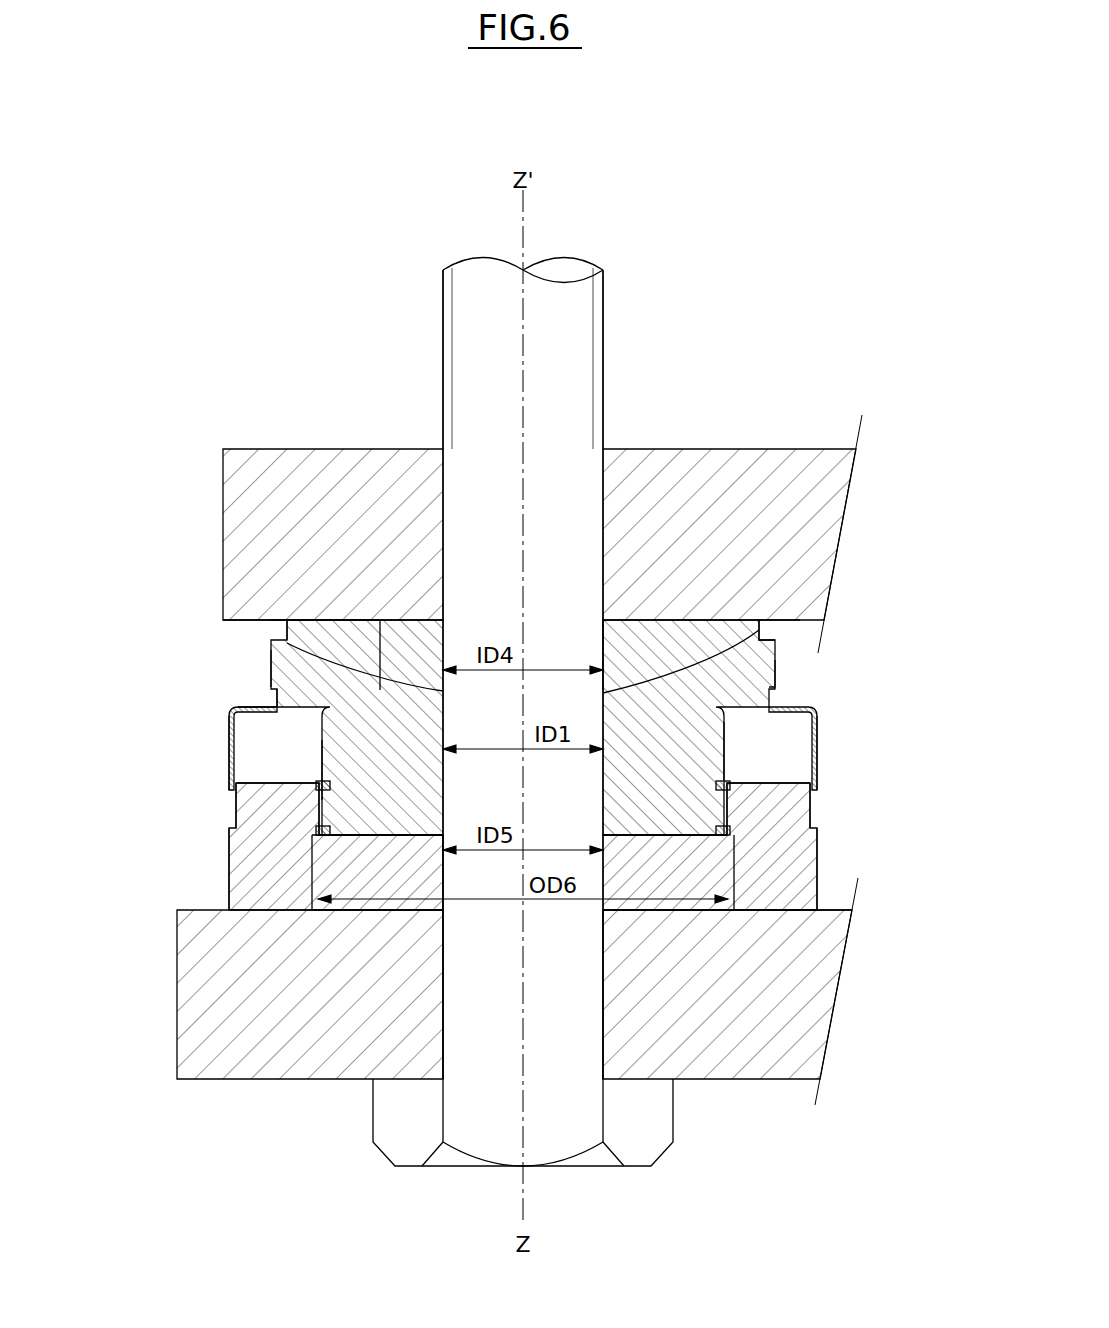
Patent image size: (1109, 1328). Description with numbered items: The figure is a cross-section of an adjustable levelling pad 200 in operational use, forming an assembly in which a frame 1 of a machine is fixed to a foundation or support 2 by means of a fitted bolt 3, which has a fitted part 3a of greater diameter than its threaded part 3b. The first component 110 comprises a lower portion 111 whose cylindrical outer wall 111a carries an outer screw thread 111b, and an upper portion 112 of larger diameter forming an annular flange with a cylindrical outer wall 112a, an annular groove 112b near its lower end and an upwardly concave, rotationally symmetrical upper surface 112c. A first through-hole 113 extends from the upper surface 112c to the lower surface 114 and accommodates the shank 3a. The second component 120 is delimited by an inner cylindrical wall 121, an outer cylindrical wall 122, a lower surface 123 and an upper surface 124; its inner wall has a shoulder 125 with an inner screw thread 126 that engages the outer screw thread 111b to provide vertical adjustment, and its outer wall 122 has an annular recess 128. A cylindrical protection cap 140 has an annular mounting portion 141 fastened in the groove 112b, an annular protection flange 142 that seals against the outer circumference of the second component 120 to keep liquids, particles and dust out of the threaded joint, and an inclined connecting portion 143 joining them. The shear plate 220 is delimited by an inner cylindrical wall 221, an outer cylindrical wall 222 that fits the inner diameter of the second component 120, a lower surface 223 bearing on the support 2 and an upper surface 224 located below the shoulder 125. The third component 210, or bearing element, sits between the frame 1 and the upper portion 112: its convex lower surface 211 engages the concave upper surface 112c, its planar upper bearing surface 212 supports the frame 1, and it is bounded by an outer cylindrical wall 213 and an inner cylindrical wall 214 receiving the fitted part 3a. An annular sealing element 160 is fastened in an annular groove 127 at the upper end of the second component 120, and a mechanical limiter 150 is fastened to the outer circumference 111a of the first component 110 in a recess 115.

The frame 1 is at (222, 544).
The support 2 is at (179, 1021).
The fitted bolt 3 is at (426, 1172).
The fitted part 3a is at (560, 1032).
The threaded part 3b is at (600, 300).
The first component 110 is at (282, 662).
The lower portion 111 is at (316, 786).
The cylindrical outer wall 111a is at (745, 745).
The outer screw thread 111b is at (745, 765).
The upper portion 112 is at (256, 682).
The cylindrical outer wall 112a is at (759, 630).
The annular groove 112b is at (773, 690).
The upper surface 112c is at (778, 636).
The first through-hole 113 is at (320, 762).
The lower surface 114 is at (305, 878).
The recess 115 is at (330, 875).
The second component 120 is at (220, 852).
The inner cylindrical wall 121 is at (745, 906).
The outer cylindrical wall 122 is at (765, 882).
The lower surface 123 is at (800, 945).
The upper surface 124 is at (750, 781).
The shoulder 125 is at (735, 843).
The inner screw thread 126 is at (735, 850).
The annular groove 127 is at (318, 828).
The annular recess 128 is at (812, 822).
The protection cap 140 is at (826, 720).
The annular mounting portion 141 is at (253, 701).
The annular protection flange 142 is at (228, 737).
The connecting portion 143 is at (245, 704).
The mechanical limiter 150 is at (316, 790).
The annular sealing element 160 is at (280, 788).
The adjustable pad 200 is at (872, 782).
The third component 210 is at (258, 630).
The lower surface 211 is at (372, 685).
The upper bearing surface 212 is at (330, 618).
The outer cylindrical wall 213 is at (278, 626).
The inner cylindrical wall 214 is at (603, 650).
The shear plate 220 is at (302, 895).
The inner cylindrical wall 221 is at (445, 886).
The outer cylindrical wall 222 is at (330, 885).
The lower surface 223 is at (345, 910).
The upper surface 224 is at (240, 813).